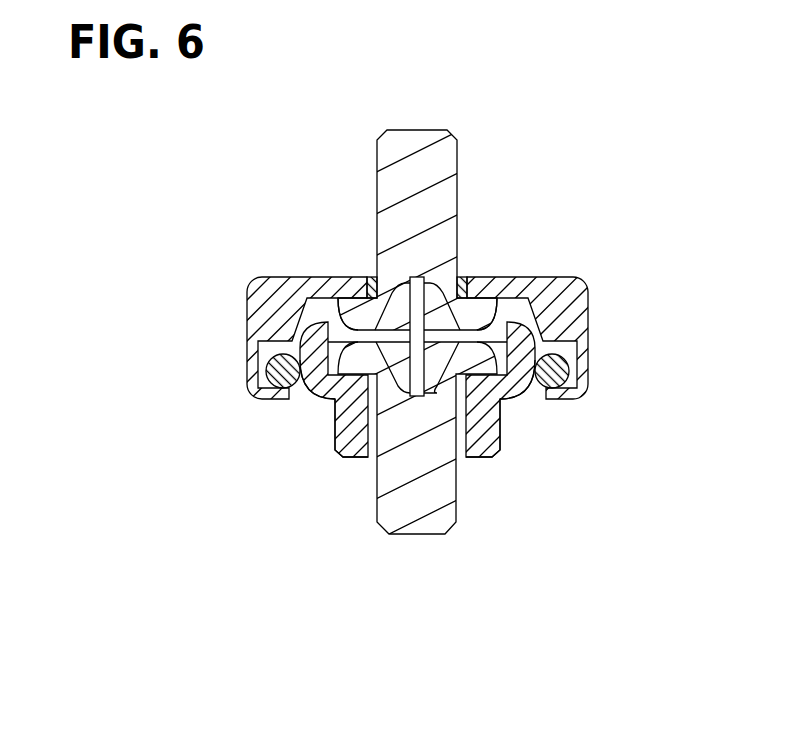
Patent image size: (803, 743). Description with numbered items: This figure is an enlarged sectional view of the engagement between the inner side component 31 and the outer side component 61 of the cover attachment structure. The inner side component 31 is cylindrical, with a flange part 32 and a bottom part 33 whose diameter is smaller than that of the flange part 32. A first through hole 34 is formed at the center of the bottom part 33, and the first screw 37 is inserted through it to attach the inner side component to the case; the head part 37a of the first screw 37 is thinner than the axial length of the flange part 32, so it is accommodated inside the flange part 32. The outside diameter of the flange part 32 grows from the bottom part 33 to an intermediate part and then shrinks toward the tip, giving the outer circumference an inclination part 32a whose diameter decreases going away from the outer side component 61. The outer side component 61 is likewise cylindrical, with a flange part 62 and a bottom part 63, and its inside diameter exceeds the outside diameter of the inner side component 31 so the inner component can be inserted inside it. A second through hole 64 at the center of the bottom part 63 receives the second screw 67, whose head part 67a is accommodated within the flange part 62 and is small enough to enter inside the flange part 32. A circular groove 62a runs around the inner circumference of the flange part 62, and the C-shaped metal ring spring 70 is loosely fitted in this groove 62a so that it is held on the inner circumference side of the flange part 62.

The inner side component 31 is at (415, 410).
The flange part 32 is at (381, 373).
The inclination part 32a is at (300, 395).
The bottom part 33 is at (358, 460).
The first through hole 34 is at (462, 460).
The first screw 37 is at (433, 537).
The head part 37a is at (535, 397).
The outer side component 61 is at (448, 358).
The flange part 62 is at (588, 309).
The groove 62a is at (570, 354).
The bottom part 63 is at (477, 276).
The second through hole 64 is at (372, 276).
The second screw 67 is at (431, 128).
The head part 67a is at (322, 296).
The ring spring 70 is at (562, 381).